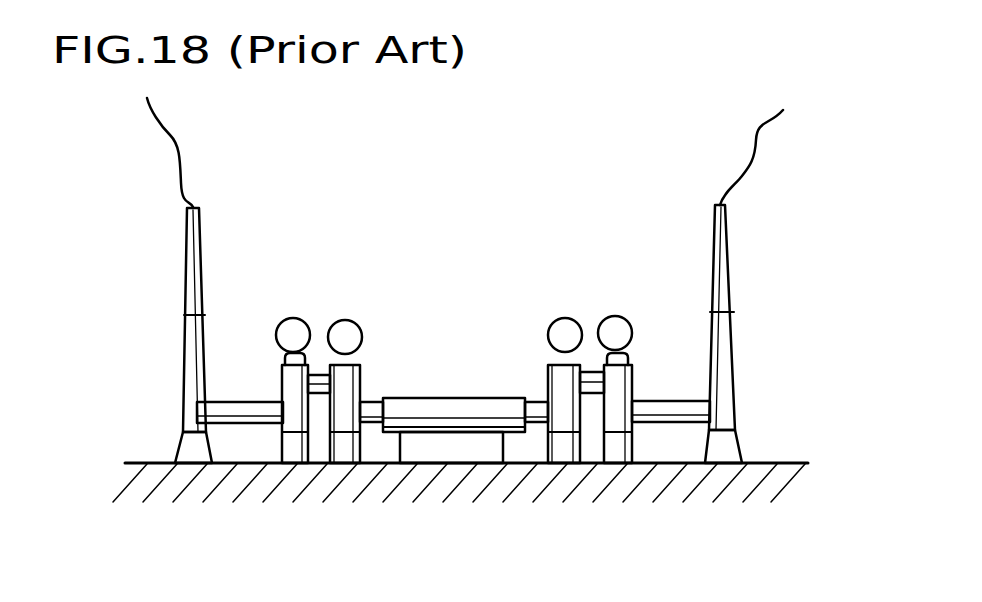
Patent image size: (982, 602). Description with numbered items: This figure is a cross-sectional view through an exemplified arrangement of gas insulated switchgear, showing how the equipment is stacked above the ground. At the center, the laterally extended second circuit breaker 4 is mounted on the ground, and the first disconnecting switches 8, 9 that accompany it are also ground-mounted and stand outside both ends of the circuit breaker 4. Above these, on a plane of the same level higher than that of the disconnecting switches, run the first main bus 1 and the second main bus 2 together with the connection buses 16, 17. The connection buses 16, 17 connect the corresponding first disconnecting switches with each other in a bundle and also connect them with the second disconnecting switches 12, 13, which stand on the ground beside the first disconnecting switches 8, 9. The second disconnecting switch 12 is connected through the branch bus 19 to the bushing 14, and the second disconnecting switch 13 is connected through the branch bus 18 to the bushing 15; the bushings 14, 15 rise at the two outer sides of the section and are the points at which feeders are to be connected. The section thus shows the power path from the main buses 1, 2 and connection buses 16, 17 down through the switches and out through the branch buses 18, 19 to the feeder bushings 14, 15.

The first main bus 1 is at (568, 328).
The second main bus 2 is at (340, 328).
The second circuit breaker 4 is at (476, 410).
The first disconnecting switch 8 is at (342, 420).
The first disconnecting switch 9 is at (565, 420).
The second disconnecting switch 12 is at (293, 420).
The second disconnecting switch 13 is at (616, 420).
The bushing 14 is at (187, 292).
The bushing 15 is at (731, 274).
The connection bus 16 is at (616, 327).
The connection bus 17 is at (291, 330).
The branch bus 18 is at (669, 402).
The branch bus 19 is at (245, 404).